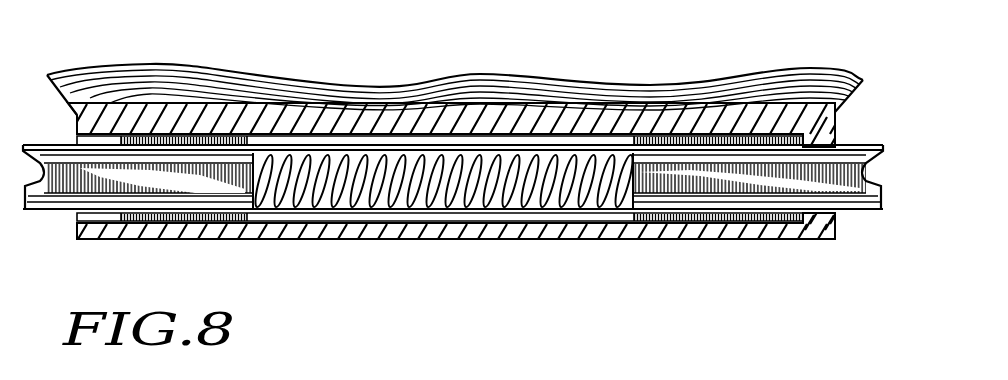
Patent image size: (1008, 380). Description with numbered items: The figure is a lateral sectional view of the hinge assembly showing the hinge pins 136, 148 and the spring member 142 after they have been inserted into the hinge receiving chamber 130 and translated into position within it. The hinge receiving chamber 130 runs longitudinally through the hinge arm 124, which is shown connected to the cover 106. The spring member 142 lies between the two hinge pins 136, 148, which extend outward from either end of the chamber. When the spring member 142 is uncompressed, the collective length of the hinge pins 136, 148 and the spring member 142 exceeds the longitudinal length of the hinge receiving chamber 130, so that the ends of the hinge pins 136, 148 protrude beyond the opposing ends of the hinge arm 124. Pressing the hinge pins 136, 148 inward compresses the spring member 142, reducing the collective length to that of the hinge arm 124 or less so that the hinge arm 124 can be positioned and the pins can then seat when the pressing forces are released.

The cover 106 is at (367, 93).
The hinge receiving chamber 130 is at (187, 113).
The hinge arm 124 is at (402, 243).
The hinge pin 136 is at (47, 215).
The hinge pin 148 is at (860, 218).
The spring member 142 is at (462, 185).